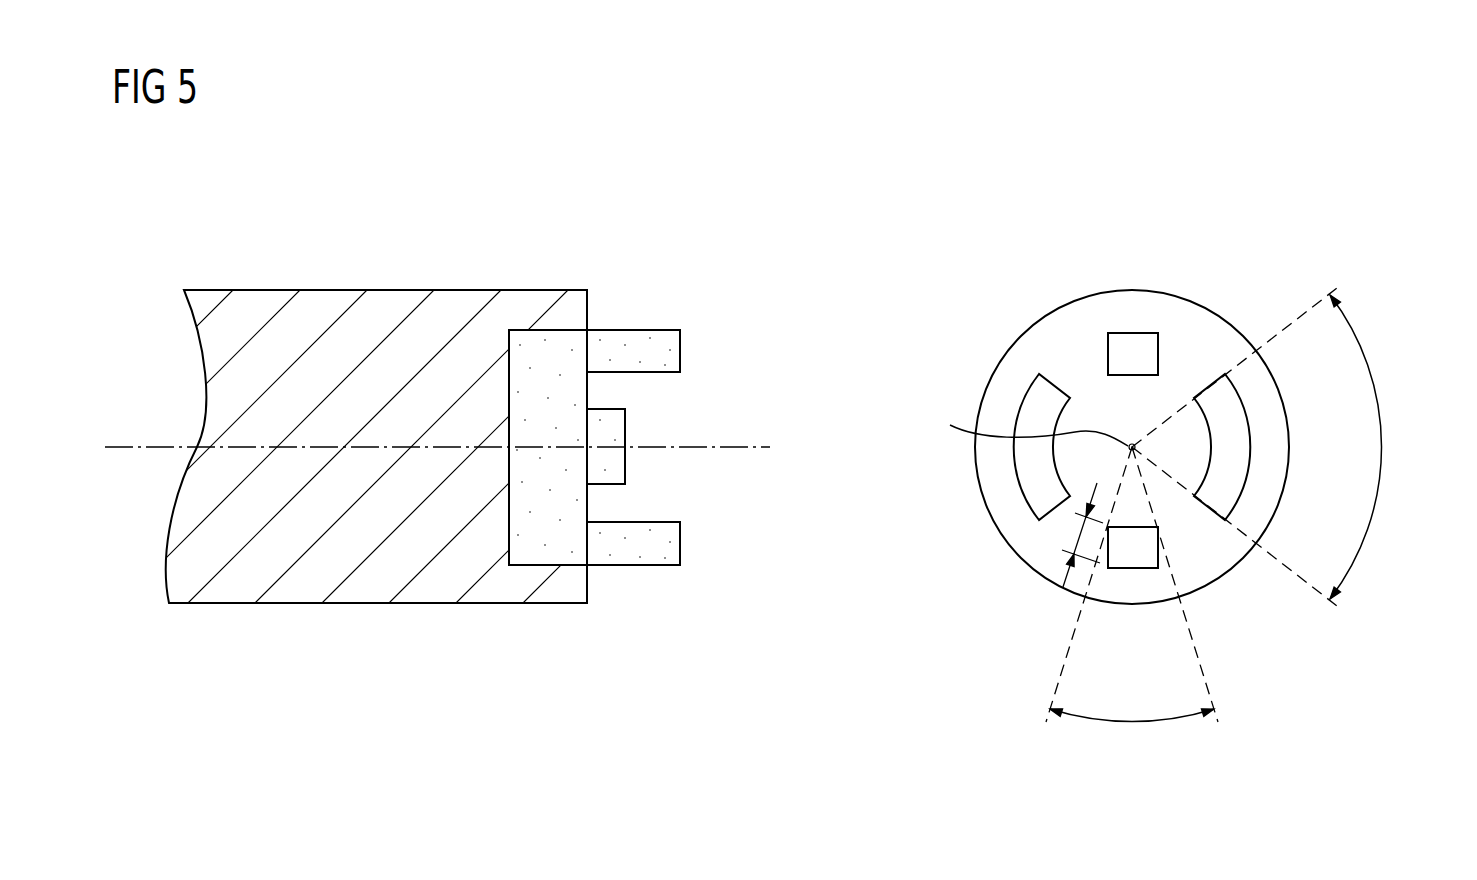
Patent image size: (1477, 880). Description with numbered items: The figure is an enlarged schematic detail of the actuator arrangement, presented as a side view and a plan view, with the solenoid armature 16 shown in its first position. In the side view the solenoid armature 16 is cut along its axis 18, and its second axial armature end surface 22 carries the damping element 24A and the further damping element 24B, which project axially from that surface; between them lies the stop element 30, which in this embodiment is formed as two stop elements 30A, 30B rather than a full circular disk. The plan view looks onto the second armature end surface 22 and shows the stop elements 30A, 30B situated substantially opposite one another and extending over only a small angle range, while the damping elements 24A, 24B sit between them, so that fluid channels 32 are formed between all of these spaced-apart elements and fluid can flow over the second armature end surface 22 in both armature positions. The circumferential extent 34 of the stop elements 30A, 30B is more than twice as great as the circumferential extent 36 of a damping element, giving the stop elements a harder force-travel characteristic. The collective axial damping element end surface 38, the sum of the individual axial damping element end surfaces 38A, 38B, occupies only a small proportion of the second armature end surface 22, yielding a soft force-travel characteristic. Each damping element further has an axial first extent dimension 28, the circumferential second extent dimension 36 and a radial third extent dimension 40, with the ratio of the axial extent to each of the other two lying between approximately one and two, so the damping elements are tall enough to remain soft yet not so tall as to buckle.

The solenoid armature 16 is at (311, 572).
The axis 18 is at (122, 440).
The second axial armature end surface 22 is at (605, 578).
The first damping element 24A is at (652, 347).
The second damping element 24B is at (657, 543).
The first extent dimension 28 is at (680, 236).
The stop element 30 is at (607, 462).
The stop element 30A is at (1035, 478).
The stop element 30B is at (1228, 425).
The fluid channel 32 is at (1056, 366).
The extent of the stop element 34 is at (1384, 450).
The second extent dimension 36 is at (1133, 724).
The collective axial damping element end surface 38 is at (1127, 354).
The axial damping element end surface 38A is at (1136, 360).
The axial damping element end surface 38B is at (1137, 538).
The third extent dimension 40 is at (1078, 548).